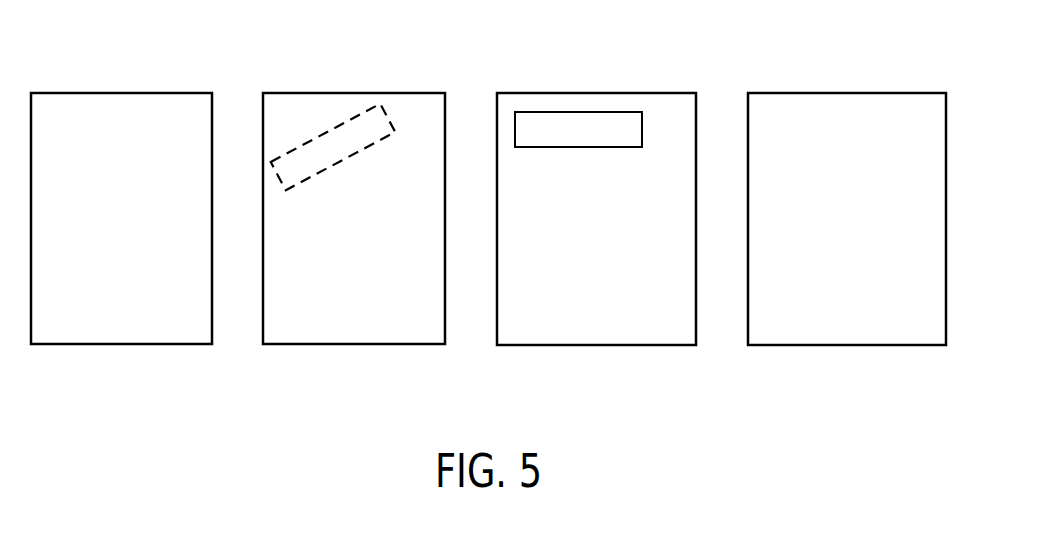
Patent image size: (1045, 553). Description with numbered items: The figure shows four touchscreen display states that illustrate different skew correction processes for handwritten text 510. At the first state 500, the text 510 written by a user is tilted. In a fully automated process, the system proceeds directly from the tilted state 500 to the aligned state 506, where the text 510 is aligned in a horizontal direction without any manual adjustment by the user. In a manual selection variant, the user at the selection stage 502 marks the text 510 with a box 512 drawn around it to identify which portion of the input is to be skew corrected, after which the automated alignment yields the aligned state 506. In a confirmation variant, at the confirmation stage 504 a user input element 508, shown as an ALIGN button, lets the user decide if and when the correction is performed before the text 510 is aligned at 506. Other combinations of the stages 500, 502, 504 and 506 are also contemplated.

The initial tilted text state 500 is at (119, 348).
The manual selection stage 502 is at (357, 348).
The user confirmation stage 504 is at (609, 349).
The aligned text state 506 is at (860, 349).
The user input element 508 is at (588, 111).
The text 510 is at (67, 117).
The box 512 is at (300, 144).